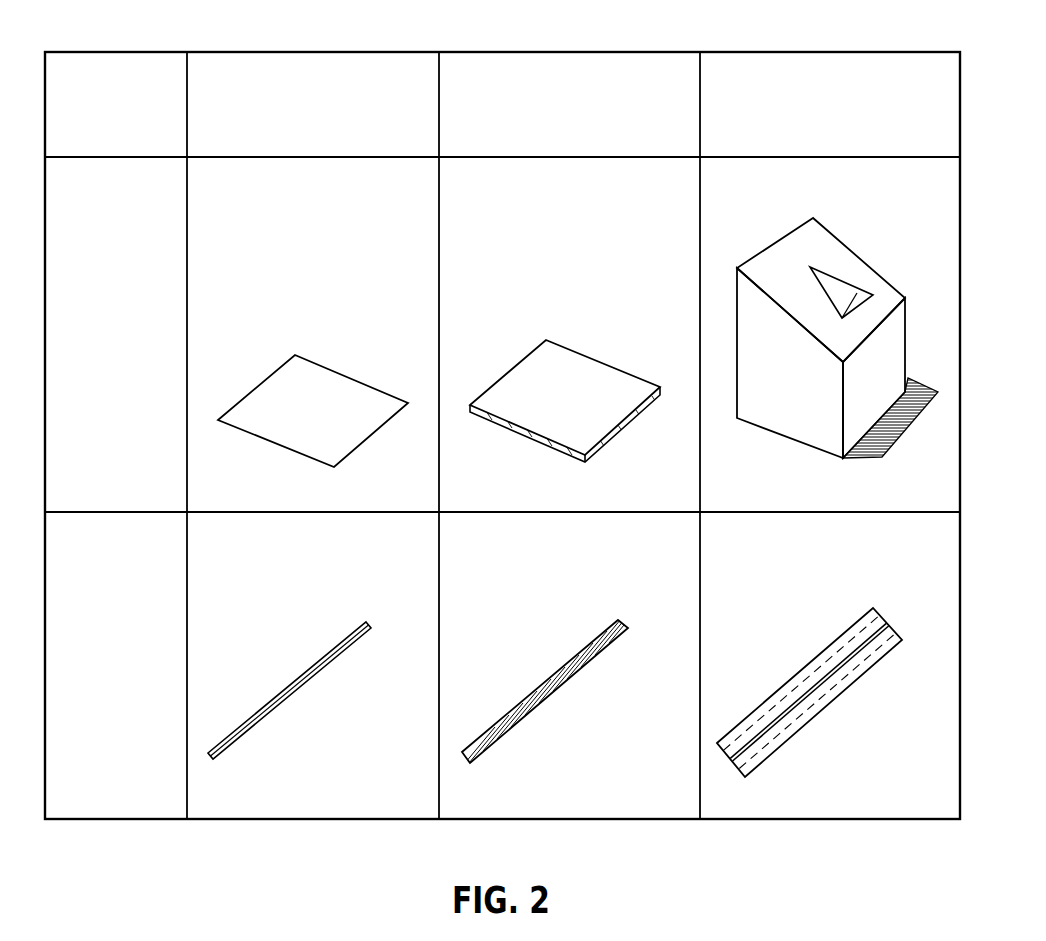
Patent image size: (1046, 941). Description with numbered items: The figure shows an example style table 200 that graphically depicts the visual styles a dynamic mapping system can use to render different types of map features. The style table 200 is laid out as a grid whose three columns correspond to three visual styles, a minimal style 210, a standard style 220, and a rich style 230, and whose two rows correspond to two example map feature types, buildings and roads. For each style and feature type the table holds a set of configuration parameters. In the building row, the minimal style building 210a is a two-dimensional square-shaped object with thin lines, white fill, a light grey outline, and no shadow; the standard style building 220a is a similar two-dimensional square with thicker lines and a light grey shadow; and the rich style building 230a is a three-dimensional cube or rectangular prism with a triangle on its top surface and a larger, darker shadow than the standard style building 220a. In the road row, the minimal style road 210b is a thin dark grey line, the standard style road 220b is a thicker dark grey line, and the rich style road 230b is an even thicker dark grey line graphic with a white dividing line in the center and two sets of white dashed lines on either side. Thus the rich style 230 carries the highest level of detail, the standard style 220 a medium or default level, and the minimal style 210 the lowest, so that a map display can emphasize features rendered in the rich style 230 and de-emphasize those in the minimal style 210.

The style table 200 is at (525, 15).
The minimal style 210 is at (273, 106).
The standard style 220 is at (540, 106).
The rich style 230 is at (788, 106).
The minimal style building 210a is at (305, 357).
The standard style building 220a is at (602, 362).
The rich style building 230a is at (852, 248).
The minimal style road 210b is at (367, 623).
The standard style road 220b is at (622, 618).
The rich style road 230b is at (882, 618).